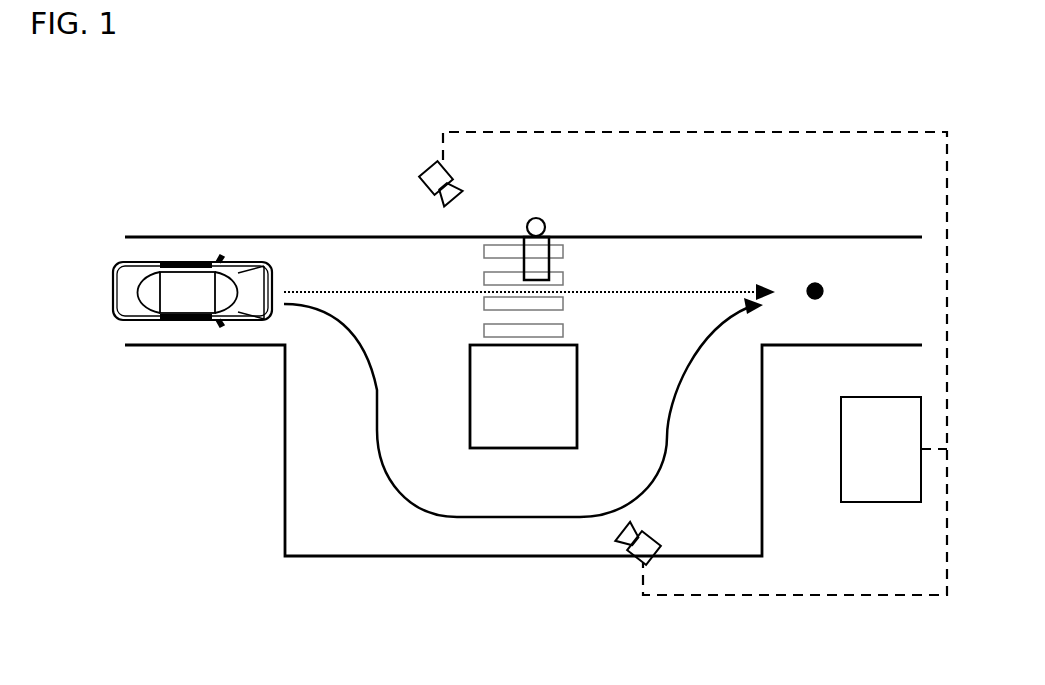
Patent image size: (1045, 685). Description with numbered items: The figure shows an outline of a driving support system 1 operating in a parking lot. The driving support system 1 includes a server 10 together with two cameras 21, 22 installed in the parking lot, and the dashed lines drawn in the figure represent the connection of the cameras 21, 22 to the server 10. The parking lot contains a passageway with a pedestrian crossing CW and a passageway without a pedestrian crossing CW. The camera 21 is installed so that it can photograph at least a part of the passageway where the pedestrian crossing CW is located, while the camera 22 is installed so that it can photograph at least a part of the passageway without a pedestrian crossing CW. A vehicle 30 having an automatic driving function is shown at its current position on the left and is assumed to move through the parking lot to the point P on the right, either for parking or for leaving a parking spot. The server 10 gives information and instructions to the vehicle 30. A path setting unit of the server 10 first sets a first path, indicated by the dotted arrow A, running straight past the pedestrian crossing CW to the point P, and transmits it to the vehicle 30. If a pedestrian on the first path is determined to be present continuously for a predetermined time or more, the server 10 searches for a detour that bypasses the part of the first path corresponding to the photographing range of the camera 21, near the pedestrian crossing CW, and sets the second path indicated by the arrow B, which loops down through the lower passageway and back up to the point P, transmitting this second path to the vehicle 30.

The driving support system 1 is at (714, 633).
The server 10 is at (882, 397).
The camera 21 is at (432, 168).
The camera 22 is at (638, 557).
The vehicle 30 is at (174, 303).
The pedestrian crossing CW is at (478, 264).
The dotted arrow indicating first path A is at (642, 291).
The arrow indicating second path B is at (668, 406).
The point P is at (840, 275).